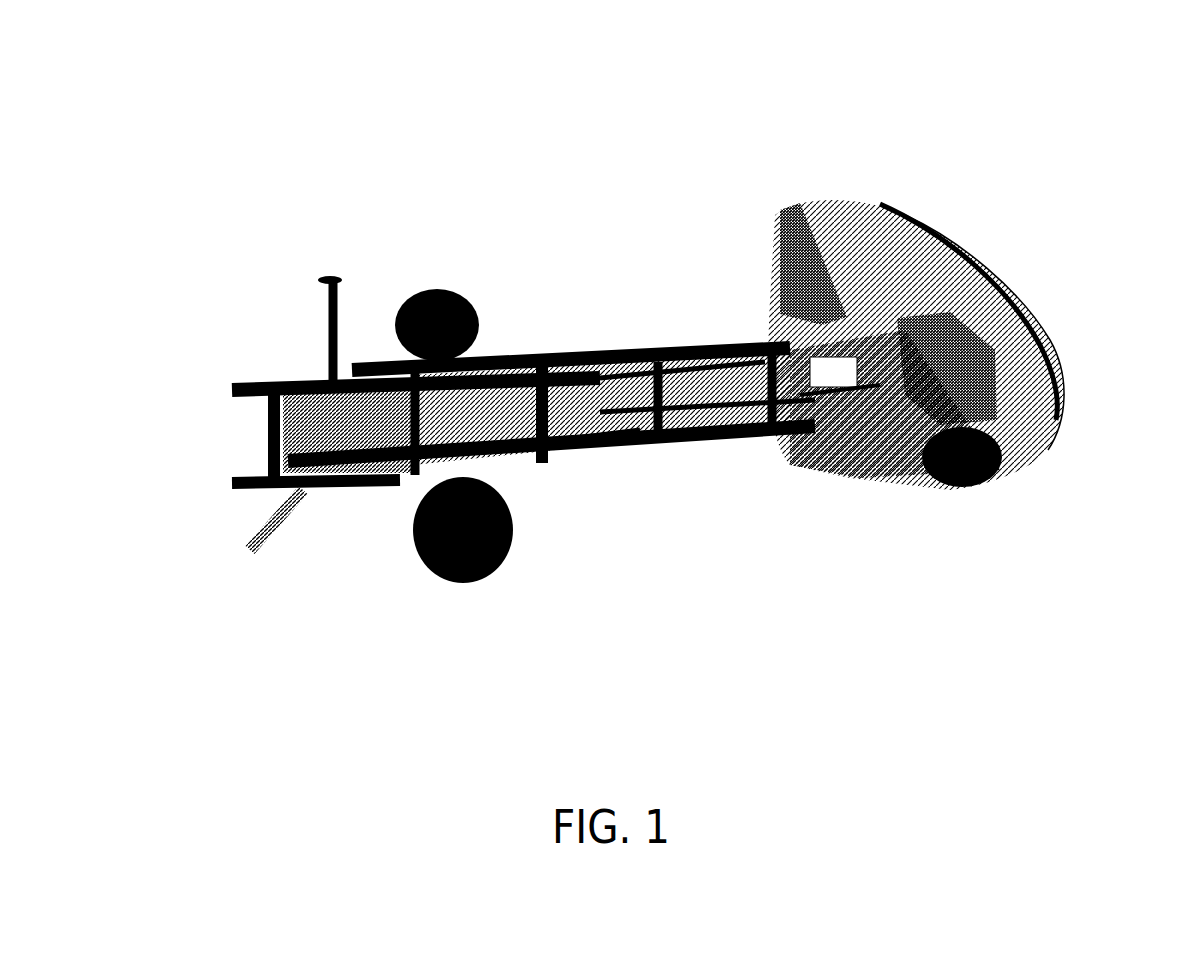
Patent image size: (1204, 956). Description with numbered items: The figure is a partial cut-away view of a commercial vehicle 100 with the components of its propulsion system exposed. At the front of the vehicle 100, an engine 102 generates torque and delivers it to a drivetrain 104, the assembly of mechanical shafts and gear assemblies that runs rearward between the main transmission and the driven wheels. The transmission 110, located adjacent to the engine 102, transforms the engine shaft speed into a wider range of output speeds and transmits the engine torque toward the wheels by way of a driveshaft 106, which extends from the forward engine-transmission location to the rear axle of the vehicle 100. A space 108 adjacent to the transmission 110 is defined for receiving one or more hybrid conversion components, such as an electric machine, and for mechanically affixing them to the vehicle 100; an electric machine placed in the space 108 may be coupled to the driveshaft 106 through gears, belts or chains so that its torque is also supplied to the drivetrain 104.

The commercial vehicle 100 is at (686, 366).
The engine 102 is at (935, 395).
The drivetrain 104 is at (943, 601).
The driveshaft 106 is at (620, 414).
The space 108 is at (820, 363).
The transmission 110 is at (880, 388).